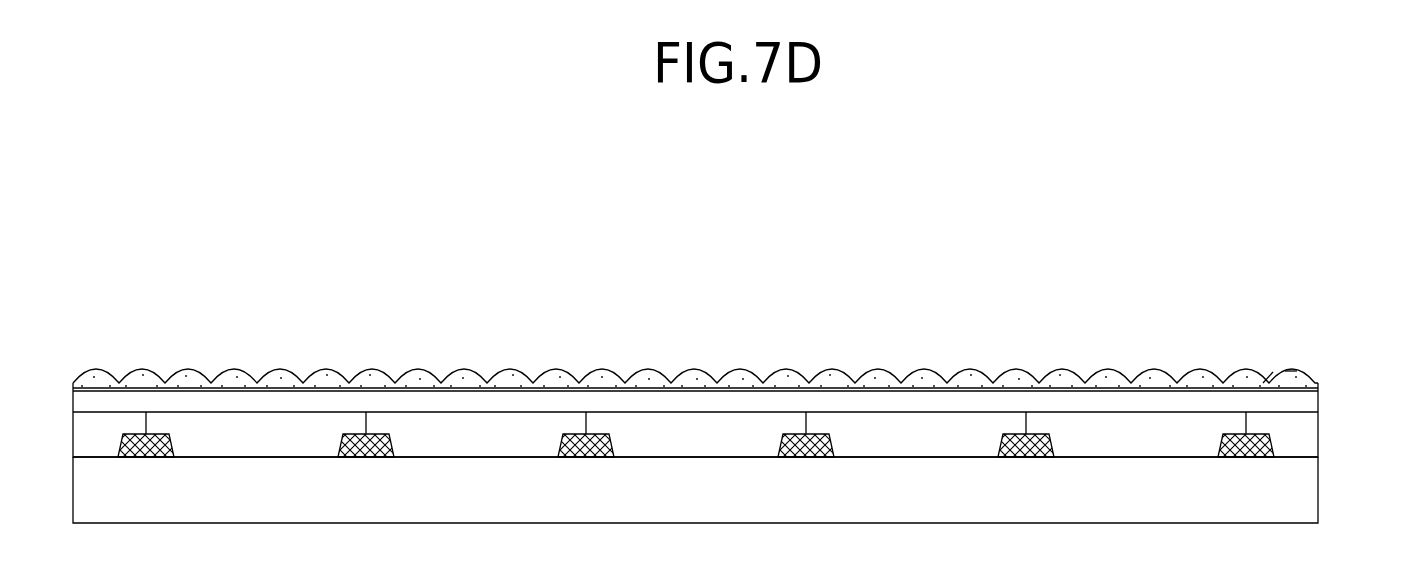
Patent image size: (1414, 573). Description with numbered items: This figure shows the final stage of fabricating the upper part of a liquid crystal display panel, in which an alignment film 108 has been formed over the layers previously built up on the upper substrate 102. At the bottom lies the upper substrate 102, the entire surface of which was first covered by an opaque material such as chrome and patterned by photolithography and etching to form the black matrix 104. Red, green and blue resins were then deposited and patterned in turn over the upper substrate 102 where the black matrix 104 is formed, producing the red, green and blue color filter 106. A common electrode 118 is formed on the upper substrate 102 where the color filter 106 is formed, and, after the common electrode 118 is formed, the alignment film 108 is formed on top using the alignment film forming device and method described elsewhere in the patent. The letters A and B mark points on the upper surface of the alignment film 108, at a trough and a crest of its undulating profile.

The upper substrate 102 is at (1318, 490).
The black matrix 104 is at (146, 458).
The color filter 106 is at (1314, 437).
The common electrode 118 is at (1314, 400).
The alignment film 108 is at (1318, 377).
The valley portion of light extraction layer A is at (1267, 383).
The peak portion of light extraction layer B is at (1291, 370).